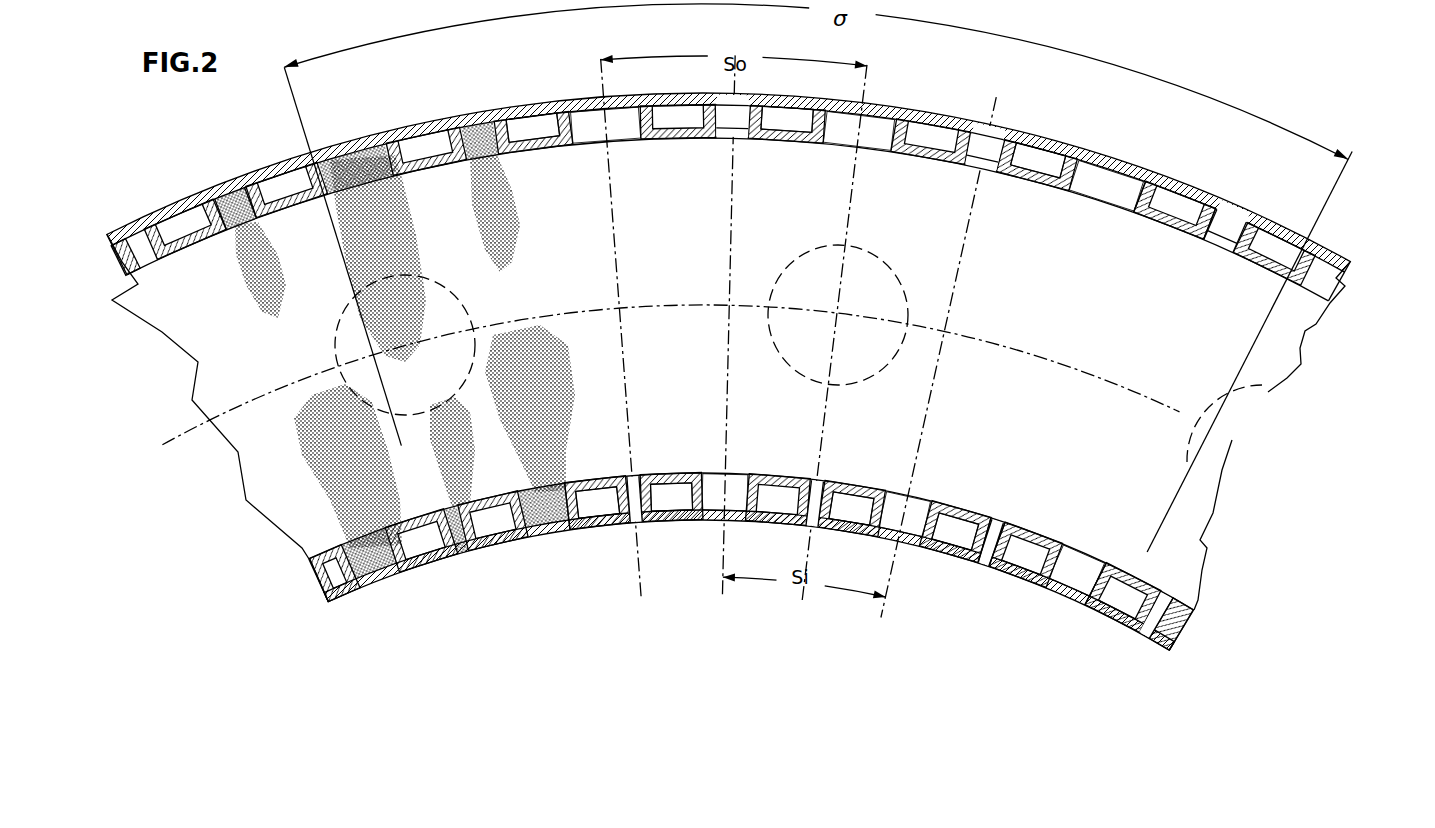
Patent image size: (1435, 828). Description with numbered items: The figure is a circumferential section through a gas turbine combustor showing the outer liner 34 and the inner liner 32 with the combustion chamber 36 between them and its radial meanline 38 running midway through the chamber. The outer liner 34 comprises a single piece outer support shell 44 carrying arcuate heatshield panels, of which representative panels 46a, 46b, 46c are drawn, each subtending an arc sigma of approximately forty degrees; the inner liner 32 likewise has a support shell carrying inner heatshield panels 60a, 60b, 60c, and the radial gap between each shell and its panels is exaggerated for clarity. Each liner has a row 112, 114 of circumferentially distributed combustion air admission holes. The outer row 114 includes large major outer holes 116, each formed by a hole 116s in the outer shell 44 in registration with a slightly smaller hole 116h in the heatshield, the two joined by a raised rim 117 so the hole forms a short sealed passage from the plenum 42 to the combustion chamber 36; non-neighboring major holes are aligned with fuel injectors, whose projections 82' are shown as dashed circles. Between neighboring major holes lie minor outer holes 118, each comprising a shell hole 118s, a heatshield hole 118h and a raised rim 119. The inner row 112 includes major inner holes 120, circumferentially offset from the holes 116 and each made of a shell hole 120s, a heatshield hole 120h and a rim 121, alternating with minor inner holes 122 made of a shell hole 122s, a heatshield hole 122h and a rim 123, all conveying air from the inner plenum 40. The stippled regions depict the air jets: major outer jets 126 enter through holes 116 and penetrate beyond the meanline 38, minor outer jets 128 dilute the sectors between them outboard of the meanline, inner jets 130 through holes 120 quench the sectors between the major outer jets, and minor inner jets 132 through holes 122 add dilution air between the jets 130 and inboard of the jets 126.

The inner liner 32 is at (1208, 635).
The outer liner 34 is at (1352, 305).
The combustion chamber 36 is at (912, 249).
The combustion chamber radial meanline 38 is at (1265, 443).
The inner plenum 40 is at (892, 645).
The plenum 42 is at (752, 43).
The outer support shell 44 is at (1289, 236).
The outer heatshield panel 46a is at (1155, 230).
The outer heatshield panel 46b is at (1203, 235).
The outer heatshield panel 46c is at (186, 252).
The inner heatshield panel 60a is at (1105, 568).
The inner heatshield panel 60b is at (1142, 582).
The inner heatshield panel 60c is at (305, 552).
The fuel injector projection 82' is at (798, 339).
The row of combustion air admission holes in the inner liner 112 is at (979, 628).
The row of combustion air admission holes in the outer liner 114 is at (1230, 93).
The major outer hole 116 is at (624, 138).
The outer shell hole 116s is at (584, 98).
The outer heatshield hole 116h is at (590, 135).
The raised rim 117 is at (760, 106).
The minor outer hole 118 is at (470, 110).
The outer shell minor hole 118s is at (228, 190).
The outer heatshield minor hole 118h is at (262, 222).
The raised rim 119 is at (510, 112).
The major inner hole 120 is at (387, 570).
The inner heatshield hole 120h is at (563, 500).
The inner shell hole 120s is at (562, 540).
The raised rim 121 is at (497, 510).
The minor inner hole 122 is at (473, 558).
The inner heatshield minor hole 122h is at (641, 476).
The inner shell minor hole 122s is at (644, 522).
The raised rim 123 is at (985, 501).
The major outer jet 126 is at (362, 256).
The minor outer jet 128 is at (244, 282).
The inner air jet 130 is at (317, 451).
The minor inner jet 132 is at (422, 459).